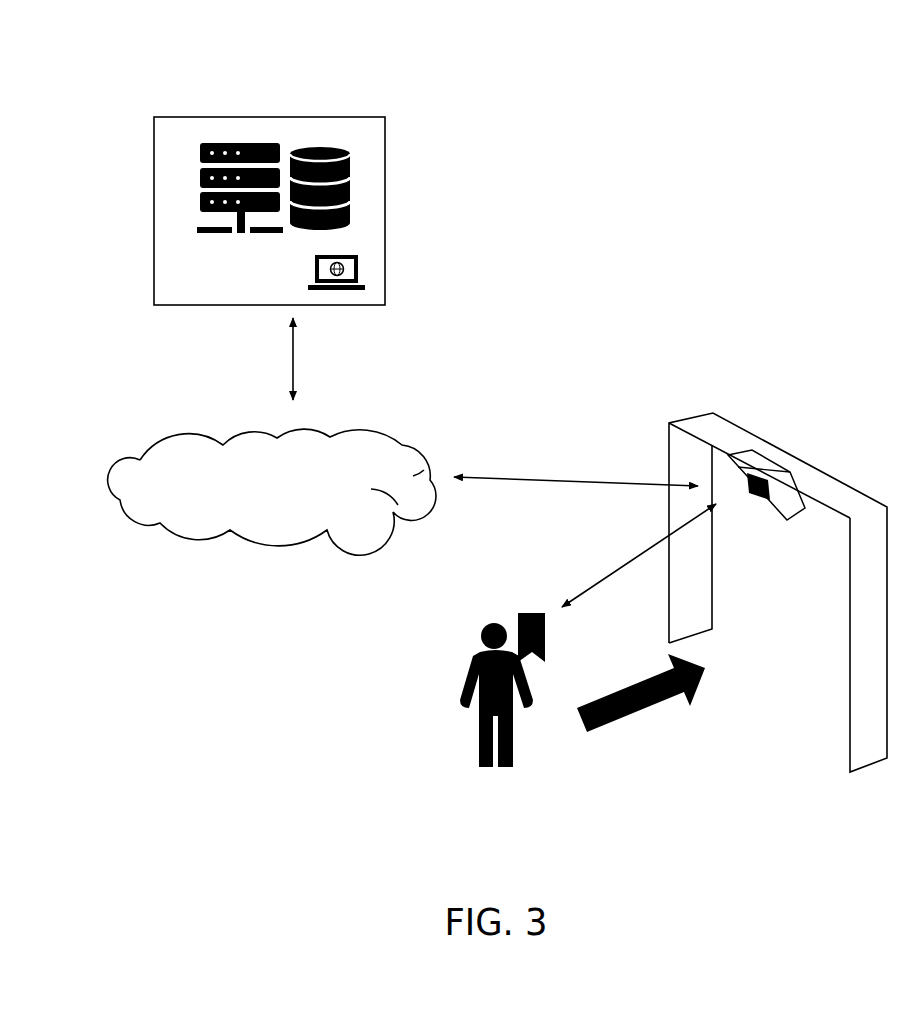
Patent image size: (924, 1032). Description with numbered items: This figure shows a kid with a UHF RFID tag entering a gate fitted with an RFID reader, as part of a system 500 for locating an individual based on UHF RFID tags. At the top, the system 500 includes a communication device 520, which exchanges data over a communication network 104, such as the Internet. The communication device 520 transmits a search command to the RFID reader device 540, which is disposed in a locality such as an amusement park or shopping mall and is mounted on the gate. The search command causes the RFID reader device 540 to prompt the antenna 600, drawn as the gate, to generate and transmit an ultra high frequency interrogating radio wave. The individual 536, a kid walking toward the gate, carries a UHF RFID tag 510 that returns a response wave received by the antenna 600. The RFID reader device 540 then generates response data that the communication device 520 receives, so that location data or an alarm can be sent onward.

The system 500 is at (337, 117).
The communication device 520 is at (338, 291).
The communication network 104 is at (254, 516).
The antenna (or gate) 600 is at (837, 517).
The RFID reader device 540 is at (740, 473).
The UHF RFID tag 510 is at (528, 613).
The individual 536 is at (512, 768).